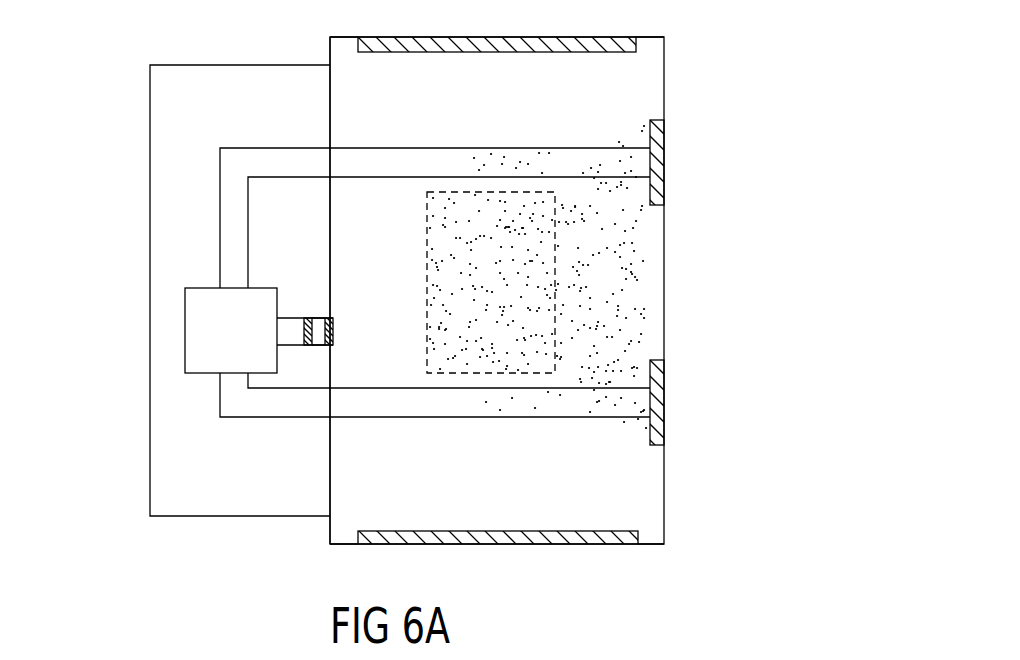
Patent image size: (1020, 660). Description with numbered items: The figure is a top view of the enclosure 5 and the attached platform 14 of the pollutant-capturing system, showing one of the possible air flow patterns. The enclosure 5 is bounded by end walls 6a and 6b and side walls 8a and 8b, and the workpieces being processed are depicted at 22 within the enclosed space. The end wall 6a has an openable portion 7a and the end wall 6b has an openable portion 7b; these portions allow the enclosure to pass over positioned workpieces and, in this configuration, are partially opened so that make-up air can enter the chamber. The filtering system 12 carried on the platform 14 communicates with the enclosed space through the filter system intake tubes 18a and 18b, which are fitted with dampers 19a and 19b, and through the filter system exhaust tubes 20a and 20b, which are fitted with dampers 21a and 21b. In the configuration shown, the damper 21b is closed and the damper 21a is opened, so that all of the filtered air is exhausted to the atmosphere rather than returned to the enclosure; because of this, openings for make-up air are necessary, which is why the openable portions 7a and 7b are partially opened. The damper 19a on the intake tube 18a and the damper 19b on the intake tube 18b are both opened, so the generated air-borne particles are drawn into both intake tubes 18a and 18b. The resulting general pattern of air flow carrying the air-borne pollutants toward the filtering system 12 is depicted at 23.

The enclosure 5 is at (103, 525).
The end wall 6a is at (340, 544).
The end wall 6b is at (345, 37).
The openable portion 7a is at (445, 531).
The openable portion 7b is at (412, 52).
The side wall 8a is at (665, 302).
The side wall 8b is at (332, 466).
The filtering system 12 is at (248, 346).
The platform 14 is at (224, 484).
The filter system intake tube 18a is at (484, 414).
The filter system intake tube 18b is at (484, 172).
The damper 19a is at (664, 398).
The damper 19b is at (664, 158).
The filter system exhaust tube 20a is at (288, 330).
The filter system exhaust tube 20b is at (320, 340).
The damper 21a is at (307, 318).
The damper 21b is at (331, 318).
The workpieces 22 is at (511, 287).
The air flow pattern 23 is at (596, 214).